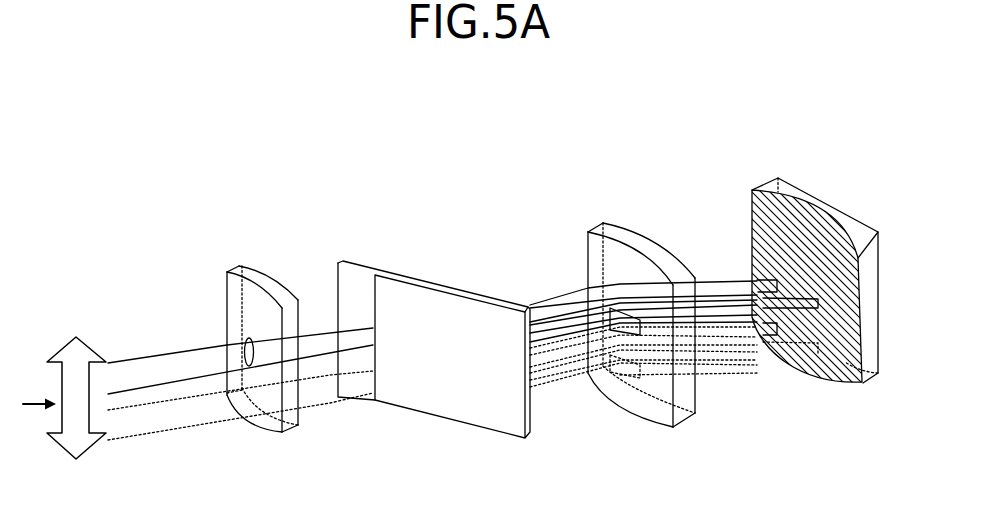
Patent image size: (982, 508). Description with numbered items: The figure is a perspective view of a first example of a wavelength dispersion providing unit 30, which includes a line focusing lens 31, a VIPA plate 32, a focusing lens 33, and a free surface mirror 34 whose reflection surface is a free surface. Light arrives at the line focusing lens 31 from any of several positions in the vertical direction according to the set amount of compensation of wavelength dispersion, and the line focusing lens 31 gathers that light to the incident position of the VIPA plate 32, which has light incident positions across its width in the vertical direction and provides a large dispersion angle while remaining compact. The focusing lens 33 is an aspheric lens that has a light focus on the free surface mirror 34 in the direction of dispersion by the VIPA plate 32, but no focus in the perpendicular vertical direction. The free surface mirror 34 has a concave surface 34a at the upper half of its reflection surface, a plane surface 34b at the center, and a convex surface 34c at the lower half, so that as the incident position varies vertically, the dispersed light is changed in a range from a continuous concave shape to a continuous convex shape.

The wavelength dispersion providing unit 30 is at (650, 150).
The line focusing lens 31 is at (242, 271).
The VIPA plate 32 is at (404, 277).
The focusing lens 33 is at (672, 256).
The free surface mirror 34 is at (752, 190).
The concave surface 34a is at (830, 260).
The plane surface 34b is at (828, 307).
The convex surface 34c is at (830, 358).